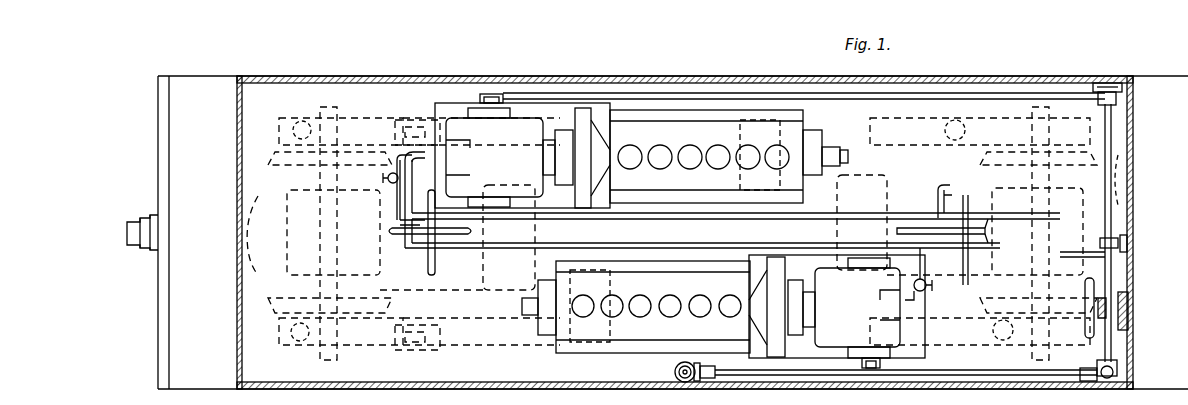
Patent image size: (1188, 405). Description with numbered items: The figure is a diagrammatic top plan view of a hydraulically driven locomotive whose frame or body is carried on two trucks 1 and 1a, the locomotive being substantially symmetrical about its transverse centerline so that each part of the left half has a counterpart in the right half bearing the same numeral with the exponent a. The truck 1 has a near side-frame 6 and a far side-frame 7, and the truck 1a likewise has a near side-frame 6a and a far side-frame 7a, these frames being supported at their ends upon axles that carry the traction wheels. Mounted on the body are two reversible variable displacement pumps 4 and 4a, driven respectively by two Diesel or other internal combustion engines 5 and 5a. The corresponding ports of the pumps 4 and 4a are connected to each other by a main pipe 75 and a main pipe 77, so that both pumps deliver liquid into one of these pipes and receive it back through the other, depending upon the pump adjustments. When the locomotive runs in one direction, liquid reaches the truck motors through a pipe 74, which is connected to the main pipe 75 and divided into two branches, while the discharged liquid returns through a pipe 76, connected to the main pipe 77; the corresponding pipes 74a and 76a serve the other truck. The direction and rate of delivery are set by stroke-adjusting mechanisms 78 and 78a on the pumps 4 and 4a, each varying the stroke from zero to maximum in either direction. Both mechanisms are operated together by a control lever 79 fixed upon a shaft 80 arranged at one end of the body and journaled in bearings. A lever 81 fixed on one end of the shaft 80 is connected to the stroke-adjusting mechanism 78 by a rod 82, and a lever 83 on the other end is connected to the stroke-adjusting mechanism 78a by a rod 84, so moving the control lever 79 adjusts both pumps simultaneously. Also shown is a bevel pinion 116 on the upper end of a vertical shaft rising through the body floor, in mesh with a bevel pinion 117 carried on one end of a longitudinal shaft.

The truck 1 is at (246, 241).
The truck 1a is at (1128, 178).
The reversible variable displacement pump 4 is at (522, 155).
The reversible variable displacement pump 4a is at (837, 306).
The internal combustion engine 5 is at (729, 156).
The internal combustion engine 5a is at (636, 307).
The near side-frame 6 is at (341, 331).
The near side-frame 6a is at (980, 131).
The far side-frame 7 is at (341, 131).
The far side-frame 7a is at (980, 331).
The pipe 74 is at (388, 231).
The pipe 74a is at (897, 231).
The main pipe 75 is at (520, 220).
The pipe 76 is at (428, 262).
The pipe 76a is at (944, 195).
The main pipe 77 is at (520, 250).
The stroke-adjusting mechanism 78 is at (490, 94).
The stroke-adjusting mechanism 78a is at (871, 368).
The control lever 79 is at (1075, 258).
The shaft 80 is at (1110, 140).
The lever 81 is at (1116, 99).
The rod 82 is at (752, 93).
The lever 83 is at (1097, 362).
The rod 84 is at (990, 376).
The bevel pinion 116 is at (677, 366).
The bevel pinion 117 is at (716, 359).